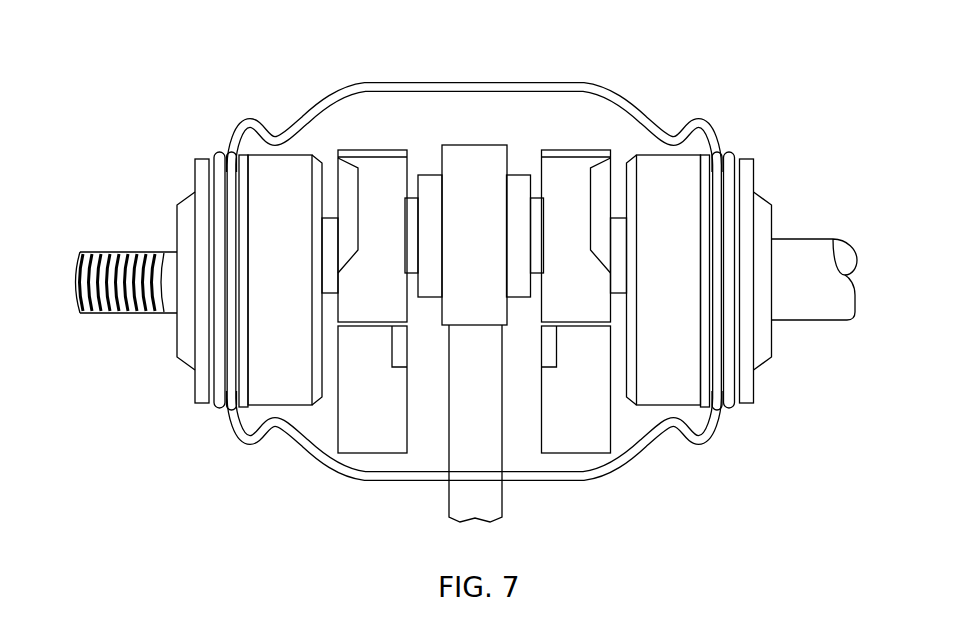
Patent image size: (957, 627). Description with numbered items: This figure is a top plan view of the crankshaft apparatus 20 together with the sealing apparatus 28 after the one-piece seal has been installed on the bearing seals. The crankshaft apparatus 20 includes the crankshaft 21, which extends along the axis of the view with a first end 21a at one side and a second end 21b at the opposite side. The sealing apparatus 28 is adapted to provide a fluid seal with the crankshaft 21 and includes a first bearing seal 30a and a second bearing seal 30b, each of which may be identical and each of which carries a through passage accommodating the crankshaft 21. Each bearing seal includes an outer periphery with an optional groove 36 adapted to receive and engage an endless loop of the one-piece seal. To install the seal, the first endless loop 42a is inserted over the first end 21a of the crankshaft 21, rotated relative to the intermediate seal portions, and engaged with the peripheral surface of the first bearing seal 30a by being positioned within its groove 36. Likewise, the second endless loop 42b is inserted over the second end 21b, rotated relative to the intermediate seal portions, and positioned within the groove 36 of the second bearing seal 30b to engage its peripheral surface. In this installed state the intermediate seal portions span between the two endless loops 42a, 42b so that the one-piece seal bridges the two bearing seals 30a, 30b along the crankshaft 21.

The crankshaft apparatus 20 is at (467, 283).
The crankshaft 21 is at (842, 260).
The first end of the crankshaft 21a is at (857, 259).
The second end of the crankshaft 21b is at (72, 276).
The sealing apparatus 28 is at (480, 283).
The first bearing seal 30a is at (772, 361).
The second bearing seal 30b is at (177, 361).
The groove 36 is at (214, 405).
The first endless loop 42a is at (720, 153).
The second endless loop 42b is at (229, 153).